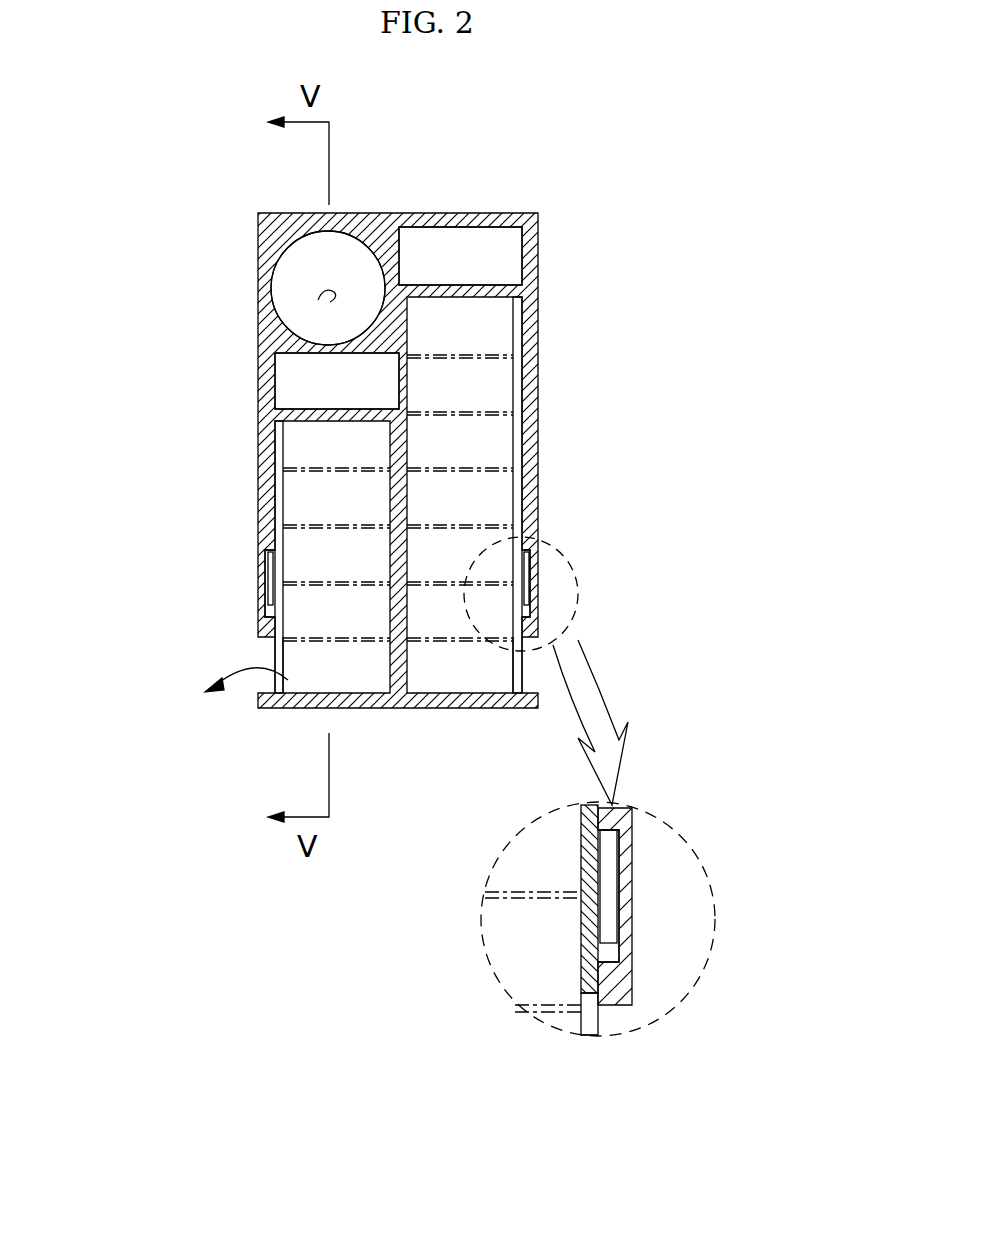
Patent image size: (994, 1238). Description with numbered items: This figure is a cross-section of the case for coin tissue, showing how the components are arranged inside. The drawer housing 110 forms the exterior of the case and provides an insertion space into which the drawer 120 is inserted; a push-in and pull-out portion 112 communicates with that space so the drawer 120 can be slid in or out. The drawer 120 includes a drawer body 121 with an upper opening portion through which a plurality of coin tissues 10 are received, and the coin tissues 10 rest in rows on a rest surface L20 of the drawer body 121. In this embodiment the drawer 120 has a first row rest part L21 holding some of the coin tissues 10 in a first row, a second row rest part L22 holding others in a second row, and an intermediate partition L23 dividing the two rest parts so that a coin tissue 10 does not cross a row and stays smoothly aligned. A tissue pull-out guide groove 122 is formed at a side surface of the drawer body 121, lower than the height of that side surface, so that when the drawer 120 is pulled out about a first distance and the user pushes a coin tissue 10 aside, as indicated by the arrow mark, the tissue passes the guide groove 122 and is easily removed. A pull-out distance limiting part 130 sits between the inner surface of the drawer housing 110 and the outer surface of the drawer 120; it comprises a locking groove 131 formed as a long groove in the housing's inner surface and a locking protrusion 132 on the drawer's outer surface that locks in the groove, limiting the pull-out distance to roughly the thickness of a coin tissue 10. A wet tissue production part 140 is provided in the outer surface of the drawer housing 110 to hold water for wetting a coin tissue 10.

The coin tissue 10 is at (481, 356).
The drawer housing 110 is at (258, 447).
The push-in and pull-out portion 112 is at (600, 1012).
The drawer 120 is at (489, 645).
The drawer body 121 is at (521, 410).
The tissue pull-out guide groove 122 is at (279, 658).
The pull-out distance limiting part 130 is at (449, 747).
The locking groove 131 is at (270, 572).
The locking protrusion 132 is at (263, 604).
The wet tissue production part 140 is at (318, 298).
The rest surface L20 is at (242, 389).
The first row rest part L21 is at (340, 442).
The second row rest part L22 is at (460, 318).
The intermediate partition L23 is at (408, 448).